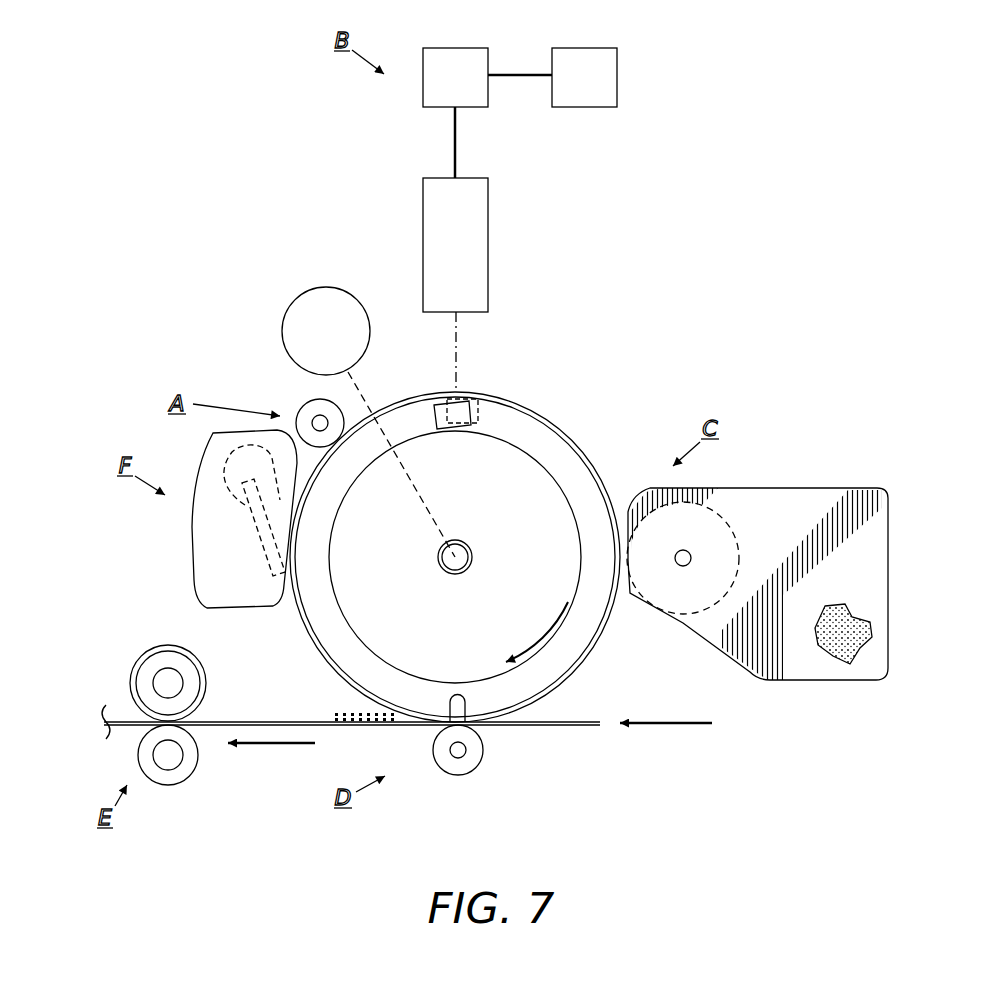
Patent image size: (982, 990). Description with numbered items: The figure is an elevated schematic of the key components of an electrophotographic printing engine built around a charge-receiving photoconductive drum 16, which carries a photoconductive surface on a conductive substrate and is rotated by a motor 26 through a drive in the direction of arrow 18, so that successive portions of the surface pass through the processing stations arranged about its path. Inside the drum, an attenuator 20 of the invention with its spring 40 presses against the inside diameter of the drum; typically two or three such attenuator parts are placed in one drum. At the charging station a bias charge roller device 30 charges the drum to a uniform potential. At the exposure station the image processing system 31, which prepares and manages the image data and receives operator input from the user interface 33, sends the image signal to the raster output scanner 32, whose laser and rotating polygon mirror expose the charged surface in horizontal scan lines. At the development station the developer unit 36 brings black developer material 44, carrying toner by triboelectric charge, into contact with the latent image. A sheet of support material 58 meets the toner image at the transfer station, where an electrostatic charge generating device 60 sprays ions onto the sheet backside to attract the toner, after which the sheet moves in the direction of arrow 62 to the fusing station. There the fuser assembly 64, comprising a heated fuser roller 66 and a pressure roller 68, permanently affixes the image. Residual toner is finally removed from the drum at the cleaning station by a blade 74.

The photoconductive drum 16 is at (480, 392).
The arrow 18 is at (545, 636).
The attenuator 20 is at (383, 637).
The motor 26 is at (352, 292).
The bias charge roller device 30 is at (303, 405).
The image processing system 31 is at (485, 48).
The raster output scanner 32 is at (475, 218).
The user interface 33 is at (605, 100).
The developer unit 36 is at (757, 573).
The spring 40 is at (457, 422).
The developer material 44 is at (838, 650).
The sheet of support material 58 is at (342, 712).
The electrostatic charge generating device 60 is at (484, 757).
The arrow 62 is at (281, 745).
The fuser assembly 64 is at (151, 686).
The heated fuser roller 66 is at (150, 660).
The pressure roller 68 is at (170, 772).
The blade 74 is at (270, 533).